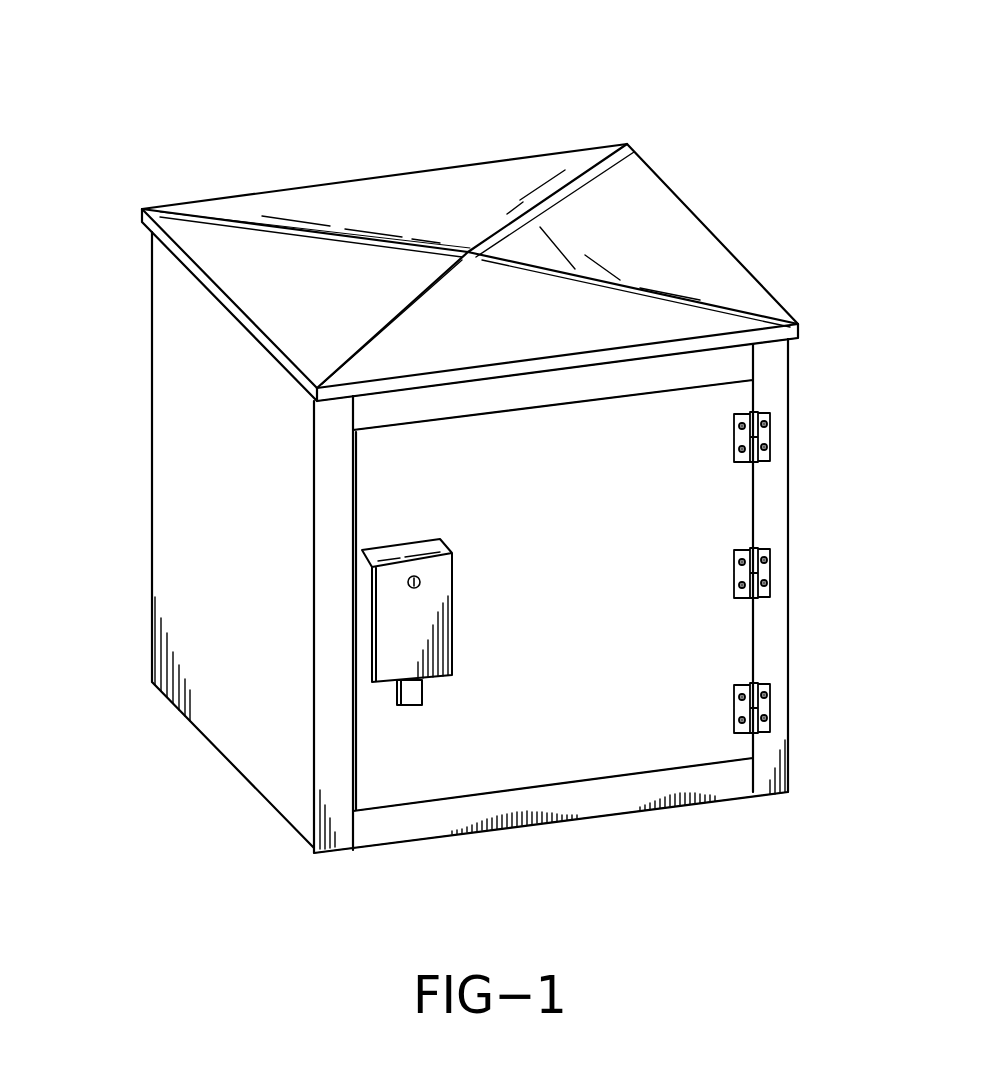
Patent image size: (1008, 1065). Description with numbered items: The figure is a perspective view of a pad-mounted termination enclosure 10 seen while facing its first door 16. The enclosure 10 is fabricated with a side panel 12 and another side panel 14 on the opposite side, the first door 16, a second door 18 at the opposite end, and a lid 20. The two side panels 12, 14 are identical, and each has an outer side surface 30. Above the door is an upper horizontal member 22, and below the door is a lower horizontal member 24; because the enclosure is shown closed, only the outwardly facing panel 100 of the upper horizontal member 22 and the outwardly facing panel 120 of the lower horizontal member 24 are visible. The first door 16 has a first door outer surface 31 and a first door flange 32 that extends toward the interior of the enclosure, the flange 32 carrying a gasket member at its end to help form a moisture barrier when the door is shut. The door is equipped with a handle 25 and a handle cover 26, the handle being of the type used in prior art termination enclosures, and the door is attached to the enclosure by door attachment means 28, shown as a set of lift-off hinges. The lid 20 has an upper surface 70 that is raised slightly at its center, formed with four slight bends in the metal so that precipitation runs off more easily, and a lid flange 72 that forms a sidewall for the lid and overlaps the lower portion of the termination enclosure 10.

The termination enclosure 10 is at (762, 125).
The side panel 12 is at (183, 515).
The side panel 14 is at (794, 543).
The first door 16 is at (550, 598).
The second door 18 is at (150, 370).
The lid 20 is at (465, 160).
The upper horizontal member 22 is at (522, 399).
The lower horizontal member 24 is at (618, 800).
The handle 25 is at (415, 695).
The lock housing 26 is at (437, 578).
The door attachment means 28 is at (763, 453).
The outer side surface 30 is at (233, 702).
The first door outer surface 31 is at (523, 710).
The first door flange 32 is at (356, 744).
The upper surface 70 is at (335, 202).
The lid flange 72 is at (183, 258).
The outwardly facing panel 100 is at (602, 382).
The outwardly facing panel 120 is at (547, 797).